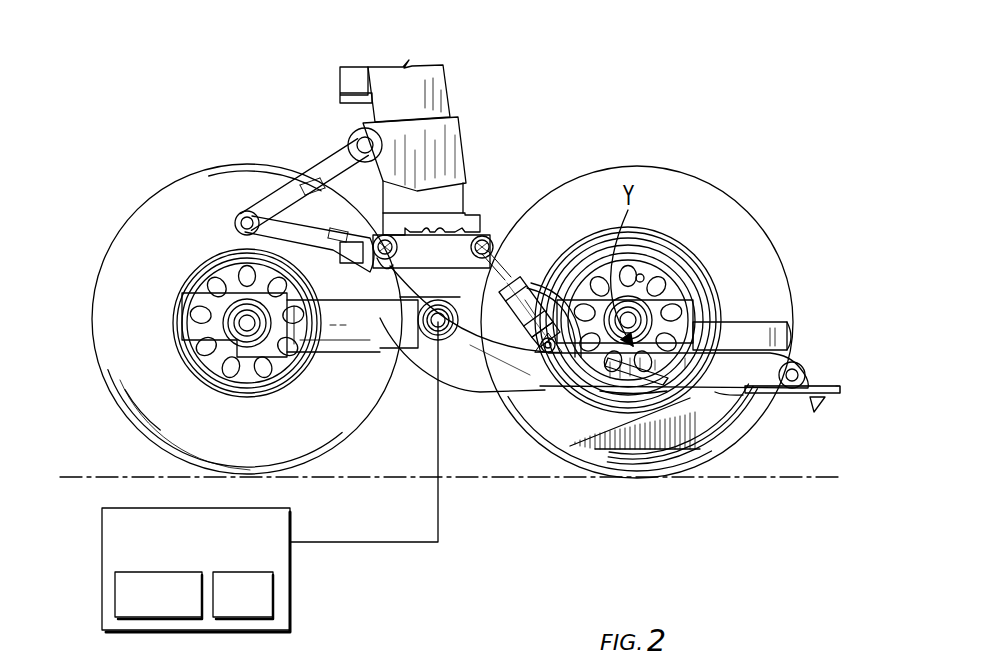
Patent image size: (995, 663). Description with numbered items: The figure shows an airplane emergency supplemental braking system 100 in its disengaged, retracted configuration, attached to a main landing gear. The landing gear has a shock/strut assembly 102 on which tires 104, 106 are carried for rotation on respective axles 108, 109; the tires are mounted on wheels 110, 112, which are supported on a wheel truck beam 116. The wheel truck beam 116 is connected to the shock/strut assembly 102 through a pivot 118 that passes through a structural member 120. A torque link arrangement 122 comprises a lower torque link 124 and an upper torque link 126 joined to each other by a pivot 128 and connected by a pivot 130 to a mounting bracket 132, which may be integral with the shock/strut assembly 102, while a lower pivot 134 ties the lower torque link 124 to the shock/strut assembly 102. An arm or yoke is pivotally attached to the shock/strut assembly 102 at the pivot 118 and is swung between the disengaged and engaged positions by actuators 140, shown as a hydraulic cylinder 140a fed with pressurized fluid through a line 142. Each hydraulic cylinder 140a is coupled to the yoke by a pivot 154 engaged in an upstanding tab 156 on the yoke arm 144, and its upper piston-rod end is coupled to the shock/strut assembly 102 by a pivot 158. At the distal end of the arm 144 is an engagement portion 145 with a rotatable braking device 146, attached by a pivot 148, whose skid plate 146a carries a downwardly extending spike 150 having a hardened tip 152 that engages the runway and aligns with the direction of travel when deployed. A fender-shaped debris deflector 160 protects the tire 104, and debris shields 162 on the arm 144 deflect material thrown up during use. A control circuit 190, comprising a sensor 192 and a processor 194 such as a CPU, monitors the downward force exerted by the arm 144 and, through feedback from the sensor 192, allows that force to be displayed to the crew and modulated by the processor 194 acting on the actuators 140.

The airplane emergency supplemental braking system 100 is at (137, 55).
The shock/strut assembly 102 is at (452, 83).
The tire 104 is at (690, 176).
The tire 106 is at (170, 186).
The axle 108 is at (722, 322).
The axle 109 is at (245, 323).
The wheel 110 is at (687, 282).
The wheel 112 is at (245, 323).
The wheel truck beam 116 is at (412, 333).
The pivot 118 is at (480, 213).
The structural member 120 is at (435, 338).
The torque link arrangement 122 is at (302, 131).
The lower torque link 124 is at (178, 302).
The upper torque link 126 is at (292, 188).
The pivot 128 is at (244, 213).
The pivot 130 is at (360, 141).
The mounting bracket 132 is at (338, 450).
The lower pivot 134 is at (398, 228).
The actuators 140 is at (535, 292).
The hydraulic cylinder 140a is at (514, 266).
The line 142 is at (608, 345).
The arm 144 is at (482, 380).
The engagement portion 145 is at (842, 362).
The rotatable braking device 146 is at (790, 410).
The skid plate 146a is at (822, 382).
The pivot 148 is at (788, 350).
The spike 150 is at (824, 400).
The tip 152 is at (812, 410).
The pivot 154 is at (578, 348).
The upstanding tab 156 is at (549, 353).
The pivot 158 is at (488, 240).
The debris deflector 160 is at (742, 338).
The debris shield 162 is at (648, 372).
The control circuit 190 is at (100, 543).
The sensor 192 is at (112, 610).
The processor 194 is at (275, 597).